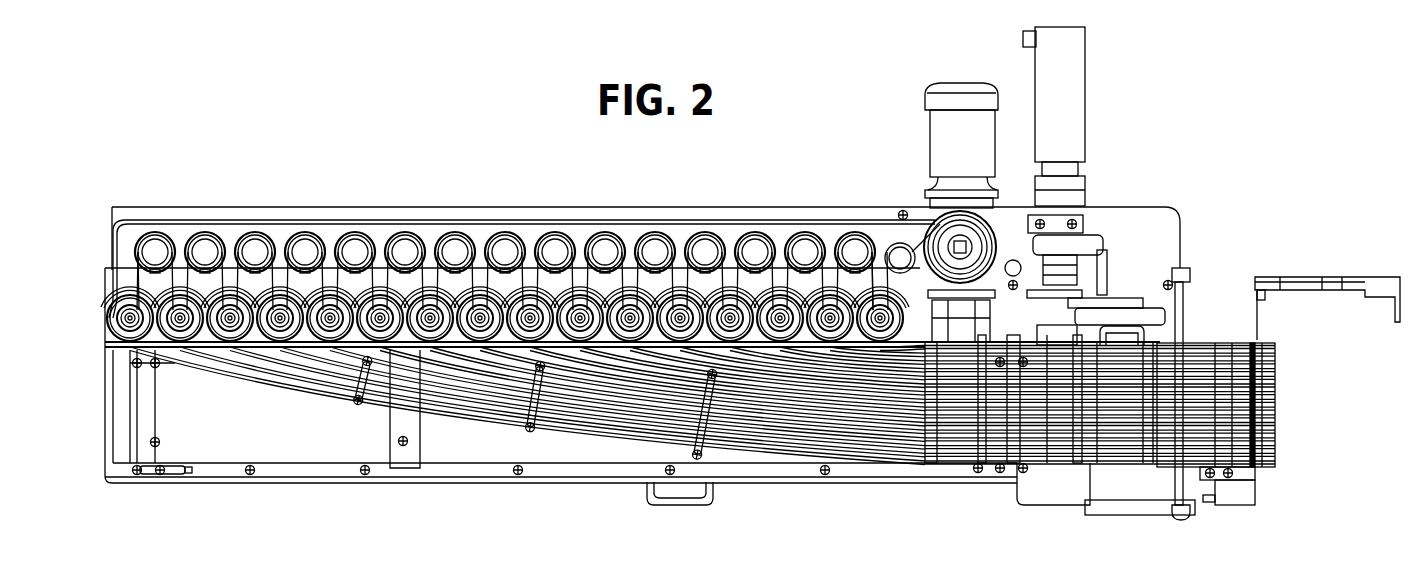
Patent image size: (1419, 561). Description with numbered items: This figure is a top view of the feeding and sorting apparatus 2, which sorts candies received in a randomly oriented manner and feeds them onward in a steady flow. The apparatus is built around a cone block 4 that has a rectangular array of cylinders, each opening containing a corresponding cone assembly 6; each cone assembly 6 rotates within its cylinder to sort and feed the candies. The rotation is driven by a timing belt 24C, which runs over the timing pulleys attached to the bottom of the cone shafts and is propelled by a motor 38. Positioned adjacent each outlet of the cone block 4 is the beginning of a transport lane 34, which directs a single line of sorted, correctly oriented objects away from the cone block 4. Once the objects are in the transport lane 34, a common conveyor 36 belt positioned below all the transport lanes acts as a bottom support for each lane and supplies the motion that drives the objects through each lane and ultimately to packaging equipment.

The feeding and sorting apparatus 2 is at (170, 170).
The cone block 4 is at (107, 288).
The cone assembly 6 is at (288, 390).
The timing belt 24C is at (235, 218).
The transport lane 34 is at (558, 425).
The common conveyor belt 36 is at (275, 458).
The motor 38 is at (930, 213).